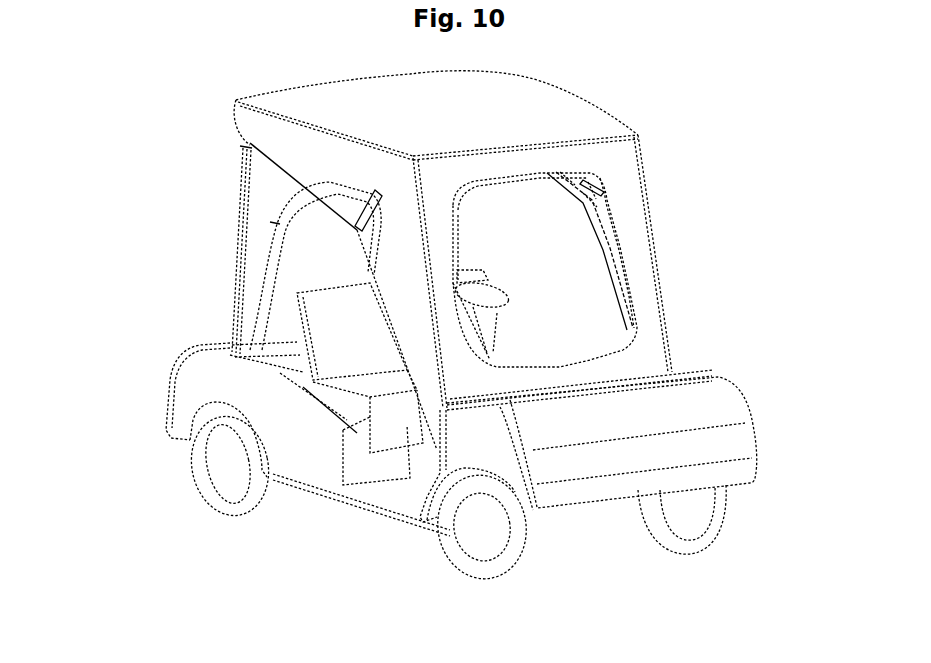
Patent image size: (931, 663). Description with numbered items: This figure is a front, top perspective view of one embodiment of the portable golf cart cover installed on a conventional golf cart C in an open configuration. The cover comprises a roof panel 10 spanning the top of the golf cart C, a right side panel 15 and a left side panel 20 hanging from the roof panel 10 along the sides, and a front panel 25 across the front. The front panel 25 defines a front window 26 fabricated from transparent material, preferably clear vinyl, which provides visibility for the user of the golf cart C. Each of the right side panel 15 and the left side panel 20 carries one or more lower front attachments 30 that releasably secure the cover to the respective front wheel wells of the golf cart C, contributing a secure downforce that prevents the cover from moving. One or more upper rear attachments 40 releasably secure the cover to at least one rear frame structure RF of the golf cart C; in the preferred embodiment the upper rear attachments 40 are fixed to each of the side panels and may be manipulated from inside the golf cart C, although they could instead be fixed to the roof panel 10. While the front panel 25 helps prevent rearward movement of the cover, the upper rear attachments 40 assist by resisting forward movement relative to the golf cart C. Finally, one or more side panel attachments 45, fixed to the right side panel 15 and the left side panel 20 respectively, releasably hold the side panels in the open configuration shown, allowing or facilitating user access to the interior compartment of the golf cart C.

The roof panel 10 is at (497, 100).
The right side panel 15 is at (290, 130).
The left side panel 20 is at (610, 237).
The front panel 25 is at (620, 160).
The front window 26 is at (637, 292).
The lower front attachments 30 is at (443, 453).
The upper rear attachments 40 is at (240, 147).
The side panel attachments 45 is at (375, 193).
The rear frame structure RF is at (240, 247).
The golf cart C is at (125, 370).